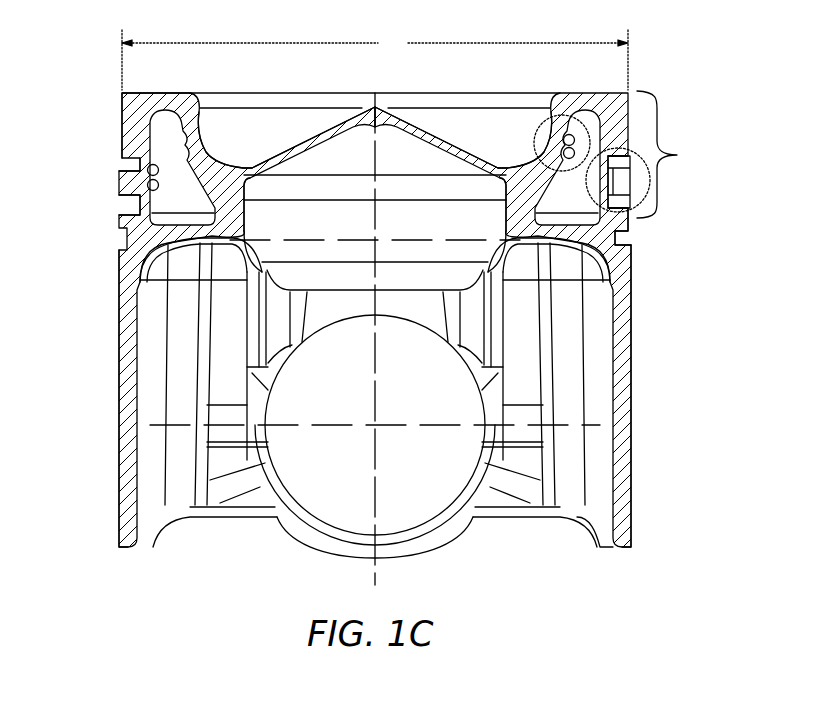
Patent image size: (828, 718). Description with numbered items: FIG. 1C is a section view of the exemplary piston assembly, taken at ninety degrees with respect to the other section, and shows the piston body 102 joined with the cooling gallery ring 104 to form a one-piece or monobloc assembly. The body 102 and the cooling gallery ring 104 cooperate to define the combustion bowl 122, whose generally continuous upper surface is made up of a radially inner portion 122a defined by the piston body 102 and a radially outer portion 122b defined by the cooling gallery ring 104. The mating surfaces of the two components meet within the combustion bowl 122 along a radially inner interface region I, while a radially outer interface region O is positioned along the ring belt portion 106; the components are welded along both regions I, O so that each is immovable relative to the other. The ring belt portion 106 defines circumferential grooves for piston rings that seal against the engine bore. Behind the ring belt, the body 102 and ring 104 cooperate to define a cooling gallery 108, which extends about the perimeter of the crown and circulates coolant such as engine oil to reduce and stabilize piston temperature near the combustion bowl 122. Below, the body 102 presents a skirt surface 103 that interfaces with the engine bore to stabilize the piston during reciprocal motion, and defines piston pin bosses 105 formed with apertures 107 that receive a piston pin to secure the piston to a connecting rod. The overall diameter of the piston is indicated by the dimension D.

The piston body 102 is at (130, 276).
The skirt surface 103 is at (117, 477).
The cooling gallery ring 104 is at (130, 118).
The piston pin bosses 105 is at (317, 537).
The ring belt portion 106 is at (661, 168).
The apertures 107 is at (485, 423).
The cooling gallery 108 is at (173, 177).
The combustion bowl 122 is at (297, 109).
The radially inner portion of the combustion bowl 122a is at (452, 140).
The radially outer portion of the combustion bowl 122b is at (200, 108).
The radially inner interface region I is at (562, 131).
The radially outer interface region O is at (612, 150).
The piston diameter D is at (375, 60).